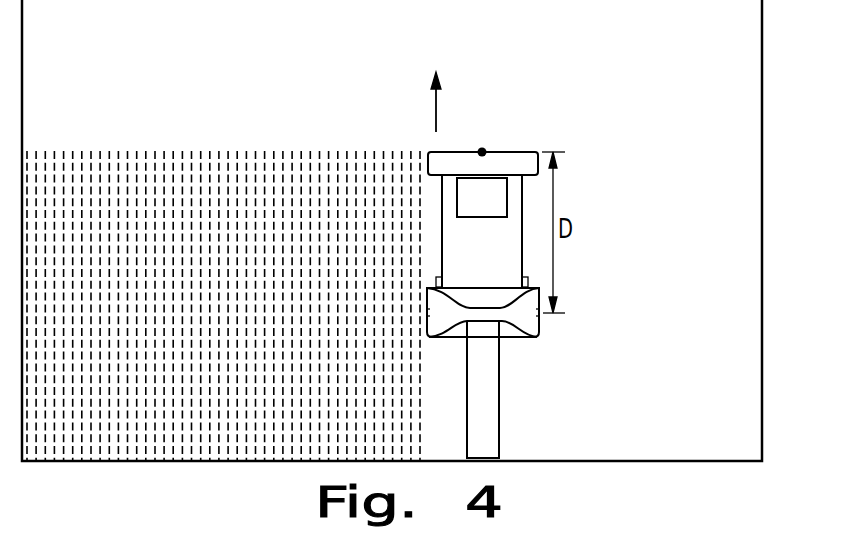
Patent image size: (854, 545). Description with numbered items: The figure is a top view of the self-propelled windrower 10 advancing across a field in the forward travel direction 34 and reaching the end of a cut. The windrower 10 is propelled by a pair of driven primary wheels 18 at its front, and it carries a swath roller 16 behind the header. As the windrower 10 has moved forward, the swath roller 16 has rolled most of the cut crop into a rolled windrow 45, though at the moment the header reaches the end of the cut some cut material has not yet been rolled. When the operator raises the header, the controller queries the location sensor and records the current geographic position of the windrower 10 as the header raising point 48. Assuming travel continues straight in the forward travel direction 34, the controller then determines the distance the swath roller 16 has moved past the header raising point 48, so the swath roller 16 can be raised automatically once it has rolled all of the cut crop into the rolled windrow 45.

The self-propelled windrower 10 is at (590, 195).
The swath roller 16 is at (539, 326).
The primary wheels 18 is at (528, 151).
The forward travel direction 34 is at (422, 102).
The rolled windrow 45 is at (499, 403).
The header raising point 48 is at (482, 152).